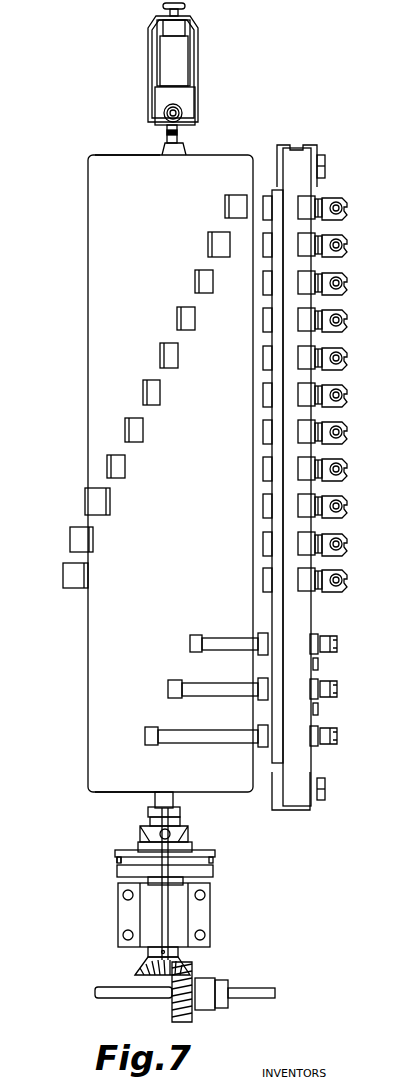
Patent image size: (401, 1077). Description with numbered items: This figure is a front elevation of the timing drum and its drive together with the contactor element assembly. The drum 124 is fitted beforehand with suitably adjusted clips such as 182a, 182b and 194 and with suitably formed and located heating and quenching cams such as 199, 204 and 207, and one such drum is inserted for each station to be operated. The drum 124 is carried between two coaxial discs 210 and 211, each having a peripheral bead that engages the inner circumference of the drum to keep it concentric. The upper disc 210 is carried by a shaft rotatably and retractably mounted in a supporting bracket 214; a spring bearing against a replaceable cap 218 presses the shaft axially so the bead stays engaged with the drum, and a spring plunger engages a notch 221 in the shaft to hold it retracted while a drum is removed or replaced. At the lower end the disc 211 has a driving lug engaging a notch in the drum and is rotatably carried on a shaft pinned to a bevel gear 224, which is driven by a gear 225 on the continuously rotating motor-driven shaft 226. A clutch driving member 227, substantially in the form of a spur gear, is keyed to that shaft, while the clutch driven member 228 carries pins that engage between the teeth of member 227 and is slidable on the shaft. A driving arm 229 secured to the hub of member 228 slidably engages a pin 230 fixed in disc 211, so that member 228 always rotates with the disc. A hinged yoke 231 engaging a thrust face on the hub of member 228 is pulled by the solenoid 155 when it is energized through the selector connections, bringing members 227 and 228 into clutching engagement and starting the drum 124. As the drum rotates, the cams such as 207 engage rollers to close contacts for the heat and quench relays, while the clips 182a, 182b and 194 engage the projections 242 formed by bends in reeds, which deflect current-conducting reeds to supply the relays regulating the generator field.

The drum 124 is at (153, 243).
The disc 210 is at (140, 148).
The disc 211 is at (108, 792).
The clip 194 is at (224, 208).
The clip 182a is at (65, 580).
The clip 182b is at (70, 544).
The replaceable cap 218 is at (190, 40).
The supporting bracket 214 is at (190, 93).
The notch 221 is at (178, 134).
The projections 242 is at (254, 524).
The cam 204 is at (190, 646).
The cam 199 is at (160, 691).
The cam 207 is at (142, 738).
The driving arm 229 is at (150, 816).
The pin 230 is at (180, 811).
The yoke 231 is at (190, 832).
The clutch driven member 228 is at (116, 856).
The clutch driving member 227 is at (213, 872).
The solenoid 155 is at (179, 916).
The bevel gear 224 is at (190, 960).
The gear 225 is at (192, 1015).
The shaft 226 is at (252, 988).